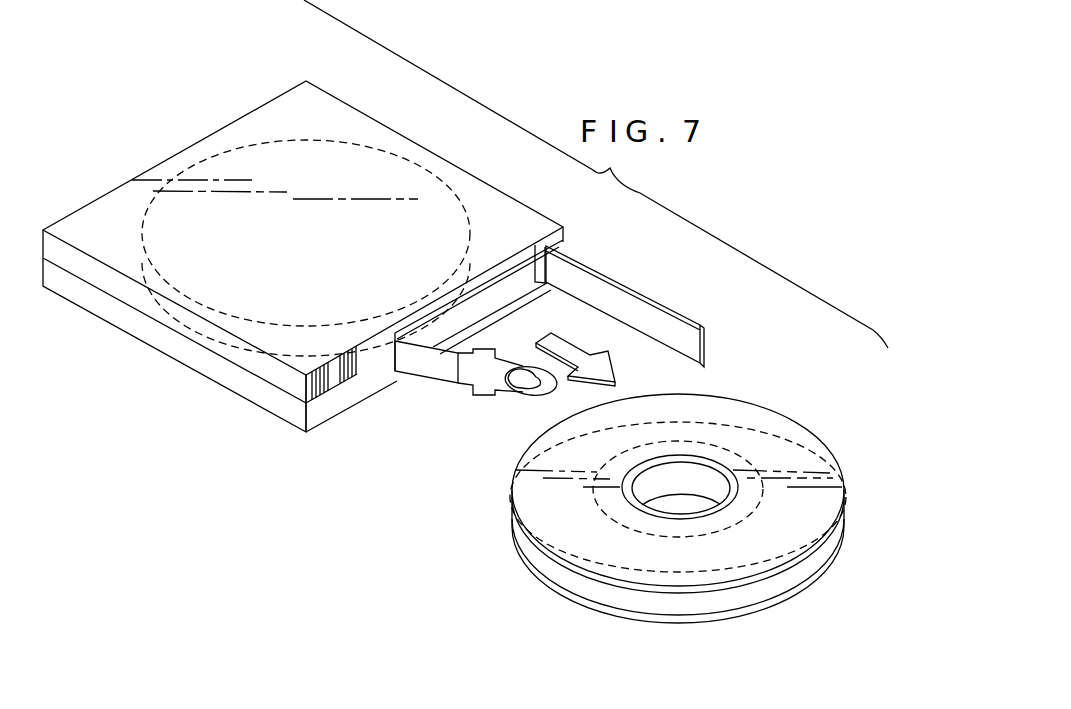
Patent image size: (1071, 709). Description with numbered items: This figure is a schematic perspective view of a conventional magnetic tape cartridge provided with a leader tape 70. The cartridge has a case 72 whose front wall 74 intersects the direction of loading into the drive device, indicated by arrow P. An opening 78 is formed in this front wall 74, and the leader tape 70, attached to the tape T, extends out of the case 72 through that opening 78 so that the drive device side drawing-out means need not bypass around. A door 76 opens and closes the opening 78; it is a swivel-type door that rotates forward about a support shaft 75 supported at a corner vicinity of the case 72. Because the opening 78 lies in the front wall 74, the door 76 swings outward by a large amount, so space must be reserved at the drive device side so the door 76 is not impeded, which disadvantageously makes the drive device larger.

The leader tape 70 is at (483, 385).
The case 72 is at (413, 142).
The front wall 74 is at (320, 413).
The support shaft 75 is at (540, 268).
The door 76 is at (677, 318).
The opening 78 is at (510, 281).
The tape T is at (441, 370).
The direction of loading P is at (553, 345).